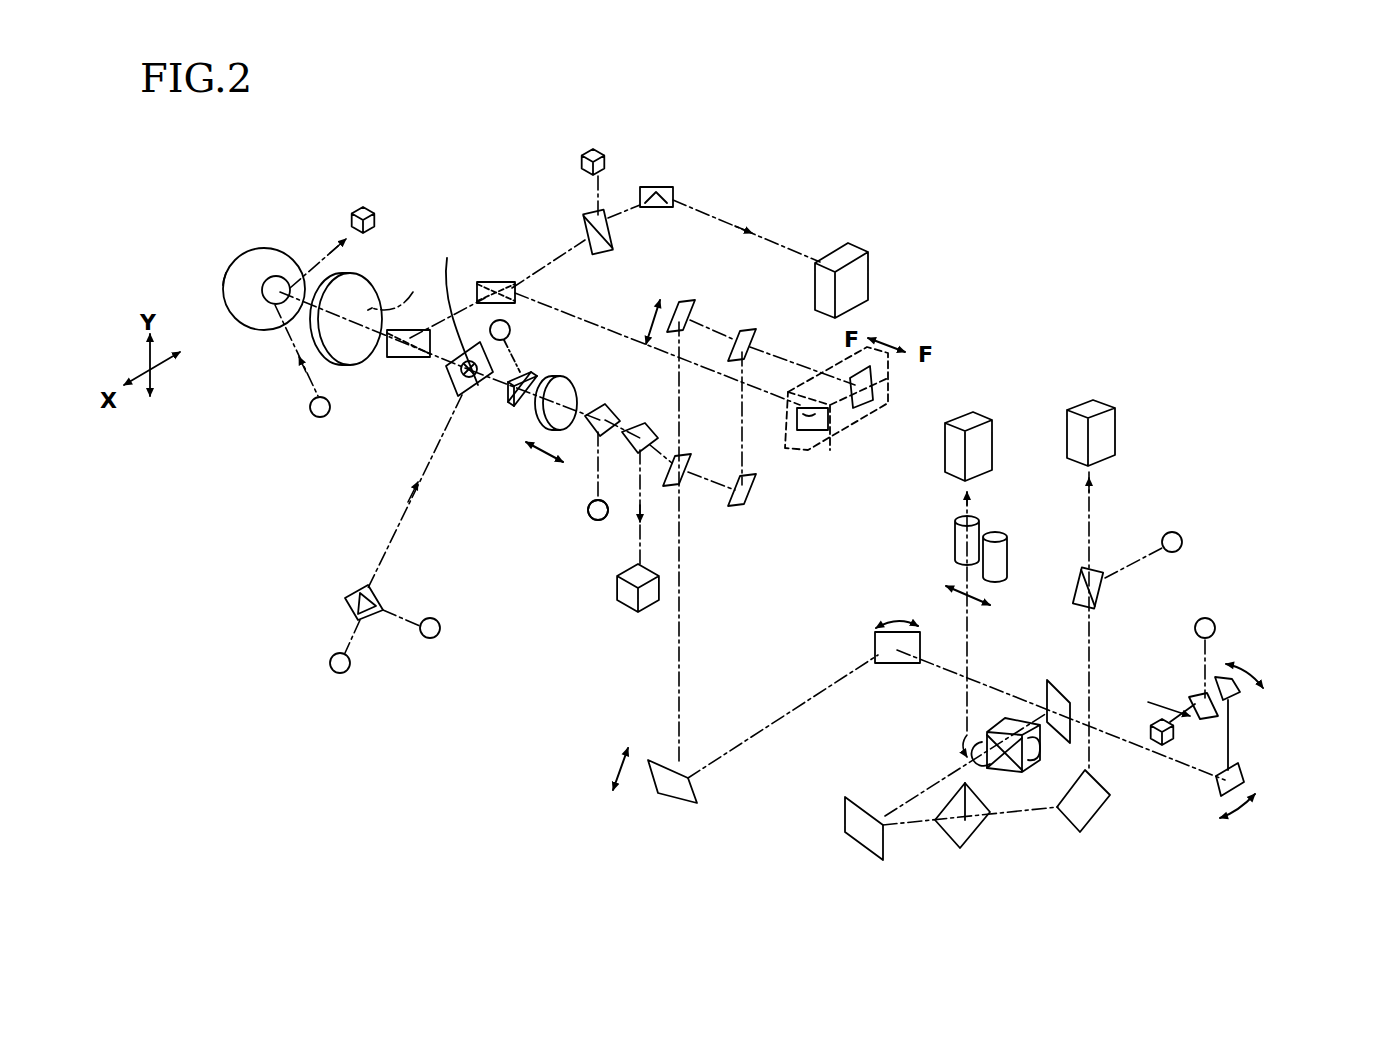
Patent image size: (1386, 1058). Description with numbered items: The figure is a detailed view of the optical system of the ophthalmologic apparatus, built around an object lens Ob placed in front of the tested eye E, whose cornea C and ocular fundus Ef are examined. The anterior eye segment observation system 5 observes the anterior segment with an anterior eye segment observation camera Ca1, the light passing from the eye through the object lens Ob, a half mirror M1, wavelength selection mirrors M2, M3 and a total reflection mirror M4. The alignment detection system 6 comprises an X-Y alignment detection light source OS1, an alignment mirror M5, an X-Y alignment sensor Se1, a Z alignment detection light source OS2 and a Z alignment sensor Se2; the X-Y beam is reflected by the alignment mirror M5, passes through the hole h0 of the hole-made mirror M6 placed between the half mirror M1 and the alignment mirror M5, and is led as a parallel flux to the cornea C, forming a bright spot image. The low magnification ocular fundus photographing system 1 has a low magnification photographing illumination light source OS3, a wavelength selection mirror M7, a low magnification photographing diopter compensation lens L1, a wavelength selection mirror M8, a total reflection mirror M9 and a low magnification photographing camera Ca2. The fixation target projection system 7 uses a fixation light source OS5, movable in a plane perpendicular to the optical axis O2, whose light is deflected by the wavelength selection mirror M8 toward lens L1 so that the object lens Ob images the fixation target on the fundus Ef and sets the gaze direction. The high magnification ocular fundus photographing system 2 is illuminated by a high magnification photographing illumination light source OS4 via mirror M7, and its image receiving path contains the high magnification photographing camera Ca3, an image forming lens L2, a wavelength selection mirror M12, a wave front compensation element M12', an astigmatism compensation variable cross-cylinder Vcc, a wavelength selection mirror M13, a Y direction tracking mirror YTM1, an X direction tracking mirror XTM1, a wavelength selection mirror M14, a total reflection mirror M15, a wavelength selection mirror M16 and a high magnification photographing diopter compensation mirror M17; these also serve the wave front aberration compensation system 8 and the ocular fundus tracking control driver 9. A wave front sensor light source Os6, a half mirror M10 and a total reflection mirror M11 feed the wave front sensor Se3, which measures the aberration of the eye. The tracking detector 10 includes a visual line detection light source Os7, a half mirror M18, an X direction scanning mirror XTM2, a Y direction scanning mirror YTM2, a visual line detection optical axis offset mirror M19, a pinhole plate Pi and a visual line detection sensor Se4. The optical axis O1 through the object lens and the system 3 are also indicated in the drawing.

The tested eye E is at (263, 250).
The ocular fundus Ef is at (224, 280).
The cornea C is at (280, 306).
The object lens Ob is at (362, 308).
The optical axis O1 is at (418, 289).
The hole h0 is at (456, 308).
The Z alignment sensor Se2 is at (365, 204).
The Z alignment detection light source OS2 is at (318, 417).
The half mirror M1 is at (392, 358).
The wavelength selection mirror M2 is at (497, 280).
The wavelength selection mirror M3 is at (600, 254).
The X-Y alignment sensor Se1 is at (593, 146).
The total reflection mirror M4 is at (662, 186).
The alignment detection system 6 is at (536, 202).
The anterior eye segment observation system 5 is at (780, 206).
The anterior eye segment observation camera Ca1 is at (852, 242).
The visual line detection optical axis offset mirror M19 is at (680, 300).
The wavelength selection mirror M16 is at (744, 330).
The wavelength selection mirror M14 is at (686, 456).
The total reflection mirror M15 is at (738, 508).
The X-Y alignment detection light source OS1 is at (510, 332).
The hole-made mirror M6 is at (476, 398).
The alignment mirror M5 is at (516, 404).
The low magnification photographing diopter compensation lens L1 is at (577, 406).
The wavelength selection mirror M8 is at (602, 442).
The total reflection mirror M9 is at (646, 426).
The optical axis O2 is at (584, 500).
The fixation light source OS5 is at (591, 520).
The low magnification ocular fundus photographing system 1 is at (486, 506).
The wavelength selection mirror M7 is at (360, 590).
The high magnification photographing illumination light source OS4 is at (428, 638).
The low magnification photographing illumination light source OS3 is at (338, 673).
The low magnification photographing camera Ca2 is at (622, 605).
The fixation target projection system 7 is at (656, 516).
The high magnification photographing diopter compensation mirror M17 is at (847, 426).
The high magnification photographing camera Ca3 is at (979, 412).
The image forming lens L2 is at (996, 534).
The wave front sensor Se3 is at (1094, 400).
The half mirror M10 is at (1094, 570).
The wave front sensor light source Os6 is at (1182, 540).
The high magnification ocular fundus photographing system 2 is at (992, 638).
The optical system 3 is at (1290, 680).
The Y direction tracking mirror YTM1 is at (887, 662).
The astigmatism compensation variable cross-cylinder Vcc is at (989, 734).
The wavelength selection mirror M13 is at (1047, 684).
The visual line detection sensor Se4 is at (1152, 722).
The half mirror M18 is at (1198, 696).
The visual line detection light source Os7 is at (1215, 626).
The Y direction scanning mirror YTM2 is at (1240, 692).
The X direction scanning mirror XTM2 is at (1220, 788).
The pinhole plate Pi is at (1206, 724).
The tracking detector 10 is at (1260, 744).
The ocular fundus tracking control driver 9 is at (790, 690).
The X direction tracking mirror XTM1 is at (668, 796).
The wave front compensation element M12' is at (857, 857).
The wavelength selection mirror M12 is at (960, 850).
The total reflection mirror M11 is at (1080, 832).
The wave front aberration compensation system 8 is at (1016, 828).